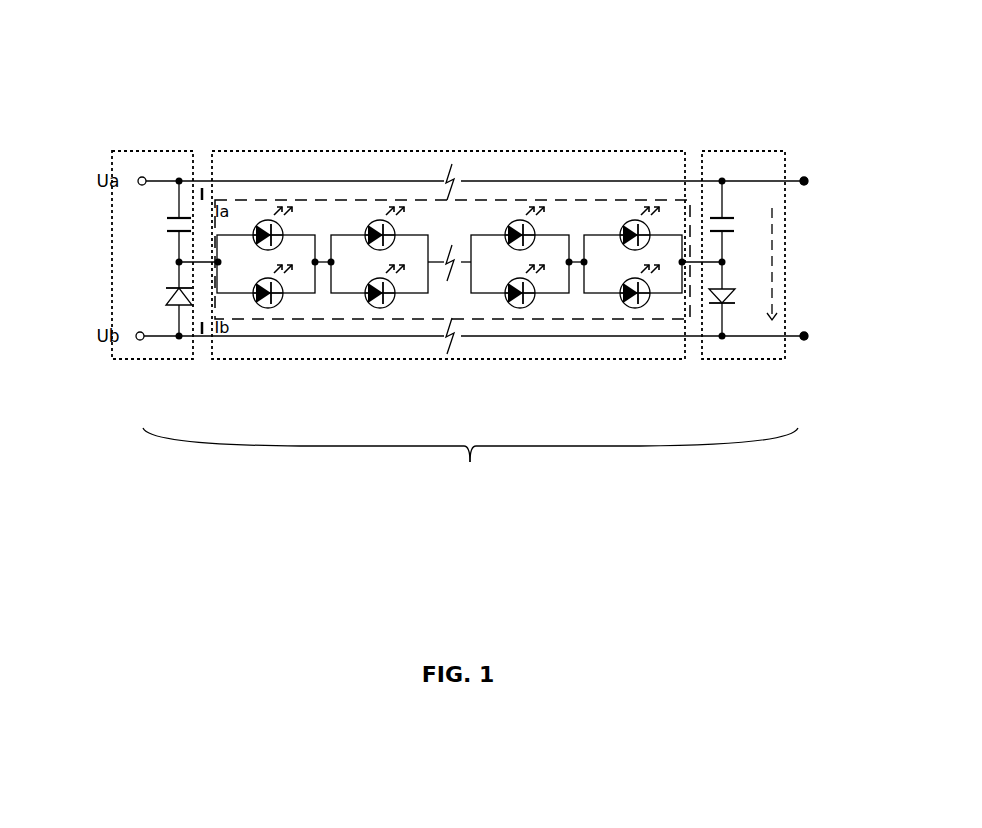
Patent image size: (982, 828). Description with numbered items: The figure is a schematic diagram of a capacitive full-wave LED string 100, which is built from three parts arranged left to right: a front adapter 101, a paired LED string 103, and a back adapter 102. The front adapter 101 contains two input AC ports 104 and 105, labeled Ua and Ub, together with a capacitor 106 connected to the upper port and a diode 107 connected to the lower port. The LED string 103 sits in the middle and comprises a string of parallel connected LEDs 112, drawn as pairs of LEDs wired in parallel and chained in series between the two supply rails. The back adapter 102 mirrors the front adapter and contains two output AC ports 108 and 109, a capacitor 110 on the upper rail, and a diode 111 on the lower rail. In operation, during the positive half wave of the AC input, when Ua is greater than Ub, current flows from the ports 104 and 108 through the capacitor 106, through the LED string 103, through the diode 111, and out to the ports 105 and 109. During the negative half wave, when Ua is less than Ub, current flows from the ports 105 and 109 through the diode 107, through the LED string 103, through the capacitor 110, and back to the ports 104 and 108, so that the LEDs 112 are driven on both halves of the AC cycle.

The capacitive full-wave LED string 100 is at (470, 486).
The front adapter 101 is at (181, 148).
The back adapter 102 is at (720, 148).
The paired LED string 103 is at (431, 148).
The input AC port 104 is at (138, 176).
The input AC port 105 is at (142, 347).
The capacitor 106 is at (167, 219).
The diode 107 is at (163, 292).
The output AC port 108 is at (810, 175).
The output AC port 109 is at (806, 346).
The capacitor 110 is at (737, 221).
The diode 111 is at (742, 293).
The parallel connected LEDs 112 is at (291, 299).